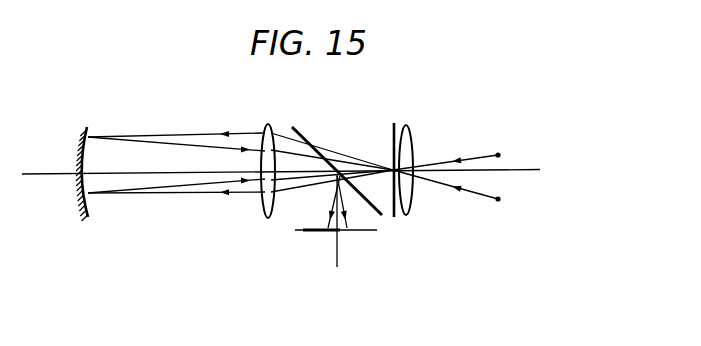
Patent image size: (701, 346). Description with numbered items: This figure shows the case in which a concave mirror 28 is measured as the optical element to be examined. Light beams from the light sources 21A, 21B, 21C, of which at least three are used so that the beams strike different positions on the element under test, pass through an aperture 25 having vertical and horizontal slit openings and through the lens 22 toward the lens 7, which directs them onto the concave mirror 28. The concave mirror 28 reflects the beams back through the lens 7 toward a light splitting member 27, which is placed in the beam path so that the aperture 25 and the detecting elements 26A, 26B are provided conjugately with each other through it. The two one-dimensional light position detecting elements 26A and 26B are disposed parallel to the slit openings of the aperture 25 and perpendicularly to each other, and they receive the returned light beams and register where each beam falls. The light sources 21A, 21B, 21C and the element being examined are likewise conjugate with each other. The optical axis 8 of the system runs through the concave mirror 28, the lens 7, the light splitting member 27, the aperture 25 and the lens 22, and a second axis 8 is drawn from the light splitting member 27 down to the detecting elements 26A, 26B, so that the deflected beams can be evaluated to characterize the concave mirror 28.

The concave mirror 28 is at (89, 129).
The lens 7 is at (263, 125).
The light splitting member 27 is at (303, 133).
The aperture 25 is at (394, 125).
The collimating lens 22 is at (412, 127).
The light source 21B is at (475, 137).
The light source 21C is at (498, 155).
The light source 21A is at (498, 199).
The one-dimensional light position detecting element 26A is at (305, 232).
The one-dimensional light position detecting element 26B is at (350, 232).
The optical axis 8 is at (528, 170).